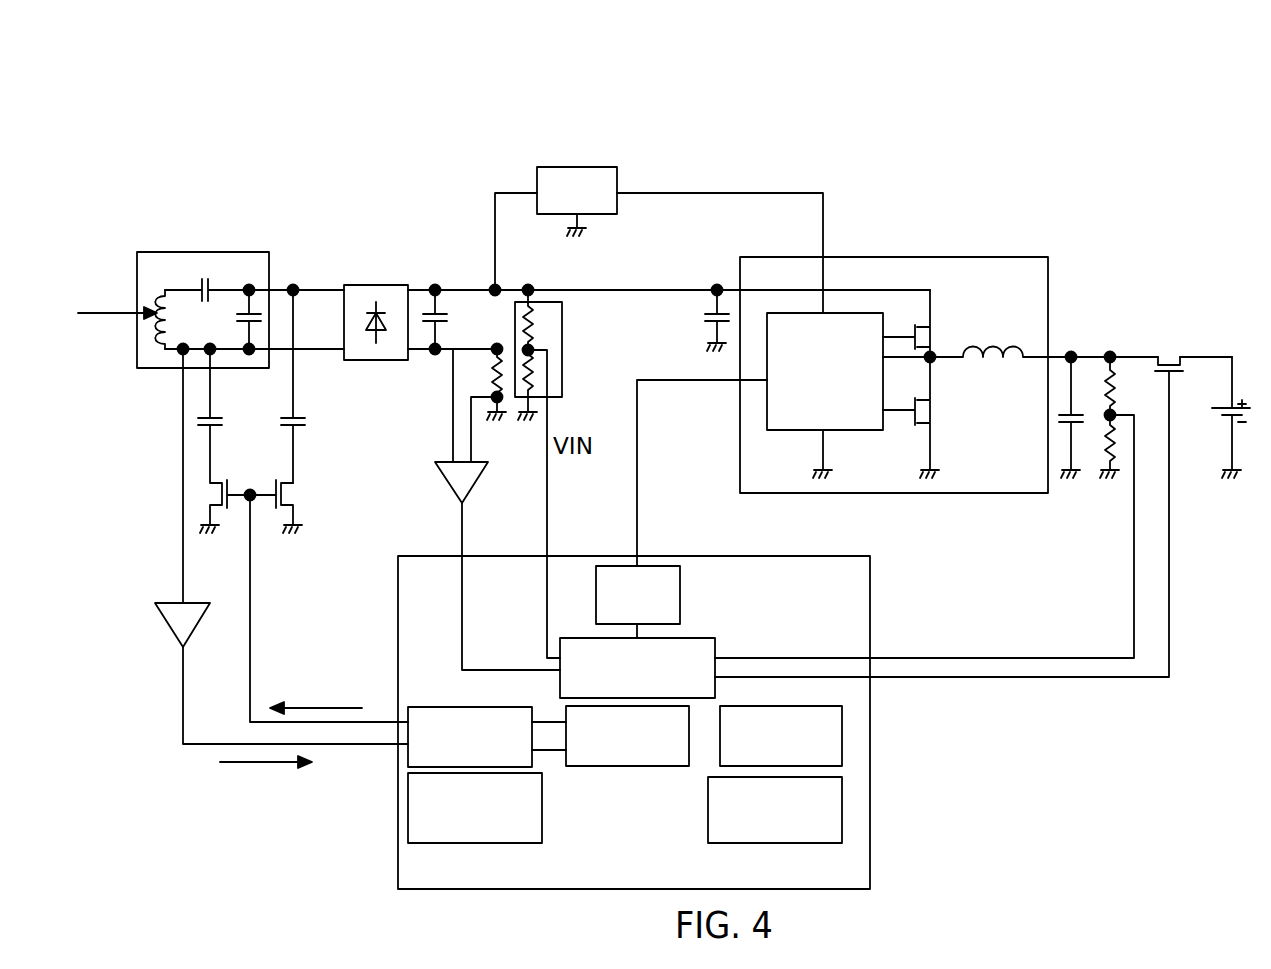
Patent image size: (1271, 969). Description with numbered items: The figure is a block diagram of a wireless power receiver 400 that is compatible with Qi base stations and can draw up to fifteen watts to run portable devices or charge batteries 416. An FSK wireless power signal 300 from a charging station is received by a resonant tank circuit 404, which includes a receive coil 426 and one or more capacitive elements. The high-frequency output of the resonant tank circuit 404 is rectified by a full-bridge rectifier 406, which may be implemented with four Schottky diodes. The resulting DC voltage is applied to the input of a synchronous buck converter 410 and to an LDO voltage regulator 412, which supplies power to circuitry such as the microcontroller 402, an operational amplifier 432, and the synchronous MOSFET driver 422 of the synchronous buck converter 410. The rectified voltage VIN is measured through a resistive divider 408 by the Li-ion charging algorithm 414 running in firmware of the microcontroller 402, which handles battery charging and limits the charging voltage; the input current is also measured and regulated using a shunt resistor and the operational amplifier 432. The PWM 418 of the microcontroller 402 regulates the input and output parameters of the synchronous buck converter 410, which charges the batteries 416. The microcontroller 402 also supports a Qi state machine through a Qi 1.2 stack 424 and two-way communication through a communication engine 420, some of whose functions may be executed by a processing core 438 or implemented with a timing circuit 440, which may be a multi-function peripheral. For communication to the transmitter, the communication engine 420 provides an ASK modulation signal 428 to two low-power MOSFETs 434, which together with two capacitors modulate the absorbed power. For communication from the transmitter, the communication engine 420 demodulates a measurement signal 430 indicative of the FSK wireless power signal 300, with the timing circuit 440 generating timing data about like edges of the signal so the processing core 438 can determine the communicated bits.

The FSK wireless power signal 300 is at (117, 312).
The wireless power receiver 400 is at (1165, 72).
The microcontroller 402 is at (870, 840).
The resonant tank circuit 404 is at (165, 252).
The full-bridge rectifier 406 is at (385, 285).
The resistive divider 408 is at (562, 350).
The synchronous buck converter 410 is at (920, 257).
The LDO voltage regulator 412 is at (537, 170).
The Li-ion charging algorithm 414 is at (715, 648).
The batteries 416 is at (1221, 405).
The PWM 418 is at (620, 566).
The communication engine 420 is at (438, 706).
The synchronous MOSFET driver 422 is at (767, 403).
The Qi 1.2 stack 424 is at (627, 736).
The receive coil 426 is at (160, 338).
The ASK modulation signal 428 is at (312, 705).
The measurement signal 430 is at (408, 817).
The operational amplifier 432 is at (441, 471).
The low-power MOSFETs 434 is at (325, 483).
The processing core 438 is at (842, 790).
The timing circuit 440 is at (475, 808).